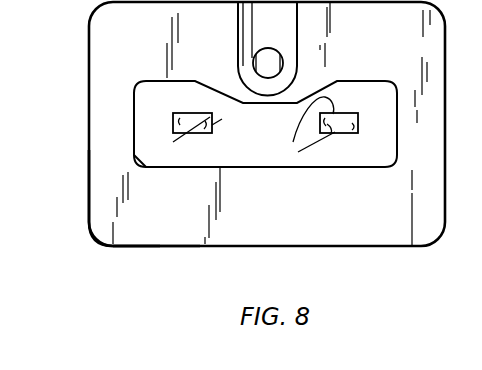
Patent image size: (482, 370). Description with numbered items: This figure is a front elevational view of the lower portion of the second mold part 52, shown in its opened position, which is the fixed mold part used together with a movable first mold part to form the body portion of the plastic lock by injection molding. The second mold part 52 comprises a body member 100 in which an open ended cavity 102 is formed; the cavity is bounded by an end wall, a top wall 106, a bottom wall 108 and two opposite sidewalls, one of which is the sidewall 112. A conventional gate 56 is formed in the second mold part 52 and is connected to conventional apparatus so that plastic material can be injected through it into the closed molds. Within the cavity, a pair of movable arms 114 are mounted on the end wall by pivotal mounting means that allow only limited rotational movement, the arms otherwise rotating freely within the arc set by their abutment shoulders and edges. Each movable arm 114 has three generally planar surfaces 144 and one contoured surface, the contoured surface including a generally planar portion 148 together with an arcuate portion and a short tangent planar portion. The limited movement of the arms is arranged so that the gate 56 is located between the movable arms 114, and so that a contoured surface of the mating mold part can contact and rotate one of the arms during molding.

The second mold part 52 is at (147, 303).
The gate 56 is at (267, 49).
The body member 100 is at (432, 232).
The open ended cavity 102 is at (90, 203).
The top wall 106 is at (340, 88).
The bottom wall 108 is at (335, 168).
The sidewall 112 is at (393, 142).
The movable arm 114 is at (163, 155).
The planar surface 144 is at (196, 113).
The planar portion 148 is at (173, 124).